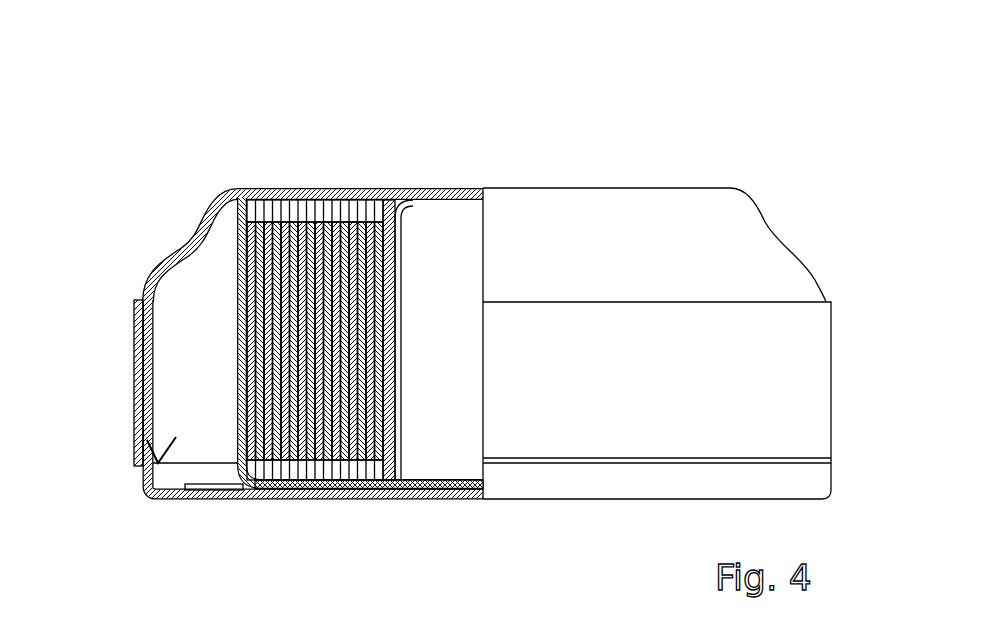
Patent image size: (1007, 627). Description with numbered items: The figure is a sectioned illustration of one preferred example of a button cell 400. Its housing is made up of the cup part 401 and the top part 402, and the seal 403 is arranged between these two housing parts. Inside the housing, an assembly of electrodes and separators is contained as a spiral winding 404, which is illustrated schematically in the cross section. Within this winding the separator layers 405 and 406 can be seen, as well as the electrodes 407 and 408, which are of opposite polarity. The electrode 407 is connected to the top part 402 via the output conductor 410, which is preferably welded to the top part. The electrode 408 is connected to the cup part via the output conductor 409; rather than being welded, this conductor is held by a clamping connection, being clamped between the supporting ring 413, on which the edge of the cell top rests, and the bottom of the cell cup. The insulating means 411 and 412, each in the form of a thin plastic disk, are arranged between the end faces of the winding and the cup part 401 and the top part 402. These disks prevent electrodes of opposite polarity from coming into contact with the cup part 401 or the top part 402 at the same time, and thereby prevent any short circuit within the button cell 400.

The button cell 400 is at (624, 117).
The cup part 401 is at (738, 377).
The top part 402 is at (214, 208).
The seal 403 is at (133, 320).
The spiral winding 404 is at (237, 329).
The separator layer 405 is at (403, 427).
The separator layer 406 is at (403, 383).
The electrode 407 is at (400, 257).
The electrode 408 is at (400, 302).
The output conductor 409 is at (237, 500).
The output conductor 410 is at (448, 188).
The insulating means 411 is at (268, 197).
The insulating means 412 is at (332, 490).
The supporting ring 413 is at (152, 487).